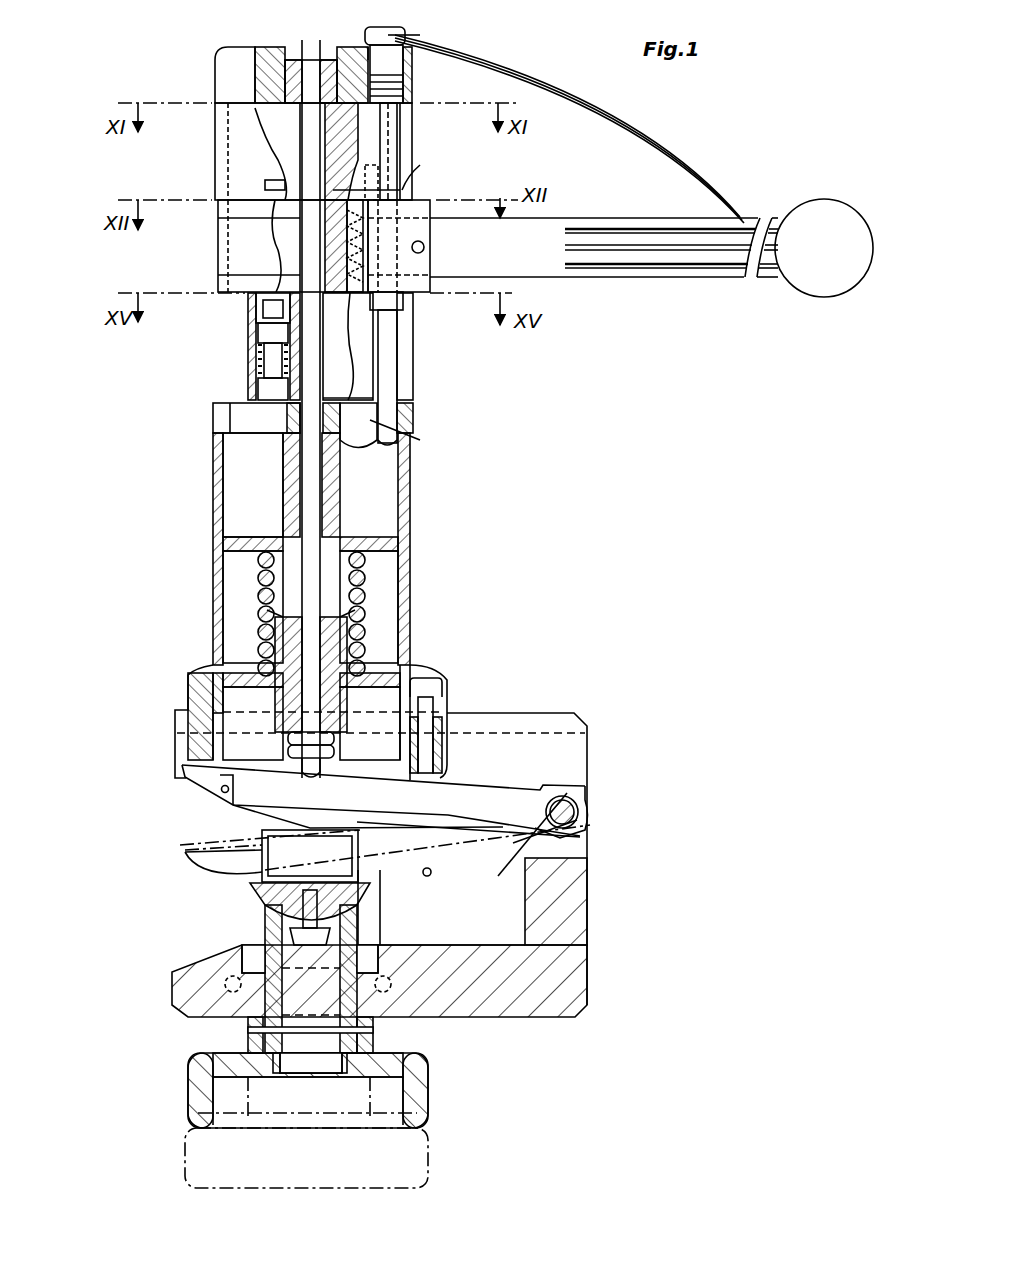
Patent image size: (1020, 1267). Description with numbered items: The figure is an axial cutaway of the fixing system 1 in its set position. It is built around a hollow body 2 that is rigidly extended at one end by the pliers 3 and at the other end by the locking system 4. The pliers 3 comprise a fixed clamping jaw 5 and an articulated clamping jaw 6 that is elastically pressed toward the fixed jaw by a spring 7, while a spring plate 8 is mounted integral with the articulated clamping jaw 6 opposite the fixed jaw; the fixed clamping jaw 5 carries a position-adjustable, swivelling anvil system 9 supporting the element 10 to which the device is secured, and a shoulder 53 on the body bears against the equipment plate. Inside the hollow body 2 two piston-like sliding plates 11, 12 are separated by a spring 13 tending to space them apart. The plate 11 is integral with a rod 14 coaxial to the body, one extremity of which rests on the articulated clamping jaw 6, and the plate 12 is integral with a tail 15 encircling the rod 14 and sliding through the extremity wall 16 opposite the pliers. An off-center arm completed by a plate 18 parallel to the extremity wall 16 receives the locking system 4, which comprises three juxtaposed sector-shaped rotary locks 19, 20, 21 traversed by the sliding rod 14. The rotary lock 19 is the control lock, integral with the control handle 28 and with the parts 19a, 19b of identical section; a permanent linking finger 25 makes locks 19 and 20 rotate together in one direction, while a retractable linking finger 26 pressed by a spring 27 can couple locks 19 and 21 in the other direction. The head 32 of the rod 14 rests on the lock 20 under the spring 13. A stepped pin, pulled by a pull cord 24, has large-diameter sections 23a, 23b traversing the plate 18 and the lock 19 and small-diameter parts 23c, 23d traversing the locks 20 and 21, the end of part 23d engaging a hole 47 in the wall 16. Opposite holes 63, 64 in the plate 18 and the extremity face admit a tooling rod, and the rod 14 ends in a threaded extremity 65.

The system 1 is at (178, 478).
The hollow body 2 is at (405, 505).
The pliers 3 is at (590, 903).
The locking system 4 is at (210, 165).
The fixed clamping jaw 5 is at (475, 1020).
The articulated clamping jaw 6 is at (480, 798).
The spring 7 is at (570, 840).
The spring plate 8 is at (400, 828).
The anvil system 9 is at (280, 895).
The element 10 is at (262, 845).
The sliding plate 11 is at (370, 668).
The sliding plate 12 is at (385, 545).
The spring 13 is at (260, 578).
The rod 14 is at (300, 445).
The tail 15 is at (345, 480).
The extremity wall 16 is at (370, 400).
The plate 18 is at (272, 62).
The rotary lock 19 is at (230, 236).
The part 19a is at (425, 200).
The part 19b is at (420, 290).
The rotary lock 20 is at (216, 115).
The rotary lock 21 is at (360, 355).
The large-diameter section 23a is at (392, 62).
The large-diameter part 23b is at (392, 265).
The small-diameter part 23c is at (390, 140).
The small-diameter part 23d is at (390, 438).
The pull cord 24 is at (592, 108).
The permanent linking finger 25 is at (378, 28).
The retractable linking finger 26 is at (270, 302).
The spring 27 is at (262, 365).
The control handle 28 is at (630, 245).
The head 32 is at (340, 60).
The hole 47 is at (412, 175).
The shoulder 53 is at (556, 712).
The hole 63 is at (238, 62).
The hole 64 is at (232, 405).
The threaded extremity 65 is at (311, 60).